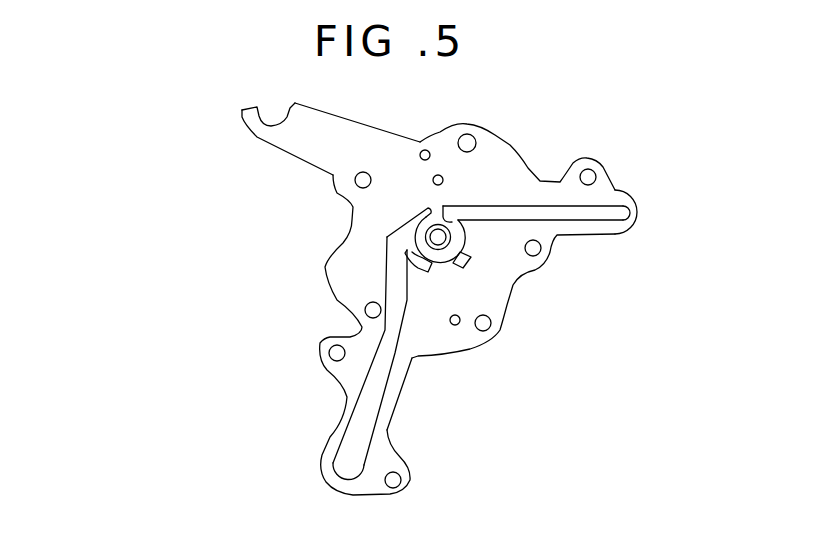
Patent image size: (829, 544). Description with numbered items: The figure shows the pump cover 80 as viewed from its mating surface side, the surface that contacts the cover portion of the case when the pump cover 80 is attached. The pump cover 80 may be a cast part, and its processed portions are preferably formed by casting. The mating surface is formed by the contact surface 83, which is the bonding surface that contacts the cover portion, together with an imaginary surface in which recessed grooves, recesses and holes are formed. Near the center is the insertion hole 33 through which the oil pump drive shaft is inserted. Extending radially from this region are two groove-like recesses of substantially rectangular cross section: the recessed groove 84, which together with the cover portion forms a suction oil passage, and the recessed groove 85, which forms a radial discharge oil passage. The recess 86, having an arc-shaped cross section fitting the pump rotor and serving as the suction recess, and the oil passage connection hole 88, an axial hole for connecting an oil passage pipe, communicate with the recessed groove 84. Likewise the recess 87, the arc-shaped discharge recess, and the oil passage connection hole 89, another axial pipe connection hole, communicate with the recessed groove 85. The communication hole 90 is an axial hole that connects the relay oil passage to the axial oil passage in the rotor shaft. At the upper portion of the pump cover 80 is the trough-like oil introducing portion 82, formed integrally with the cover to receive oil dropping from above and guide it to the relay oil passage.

The pump cover 80 is at (168, 170).
The oil introducing portion 82 is at (278, 122).
The contact surface 83 is at (337, 154).
The insertion hole 33 is at (437, 234).
The recessed groove 84 is at (373, 388).
The recessed groove 85 is at (577, 210).
The recess 86 is at (423, 270).
The recess 87 is at (466, 259).
The oil passage connection hole 88 is at (325, 463).
The oil passage connection hole 89 is at (622, 191).
The communication hole 90 is at (450, 180).